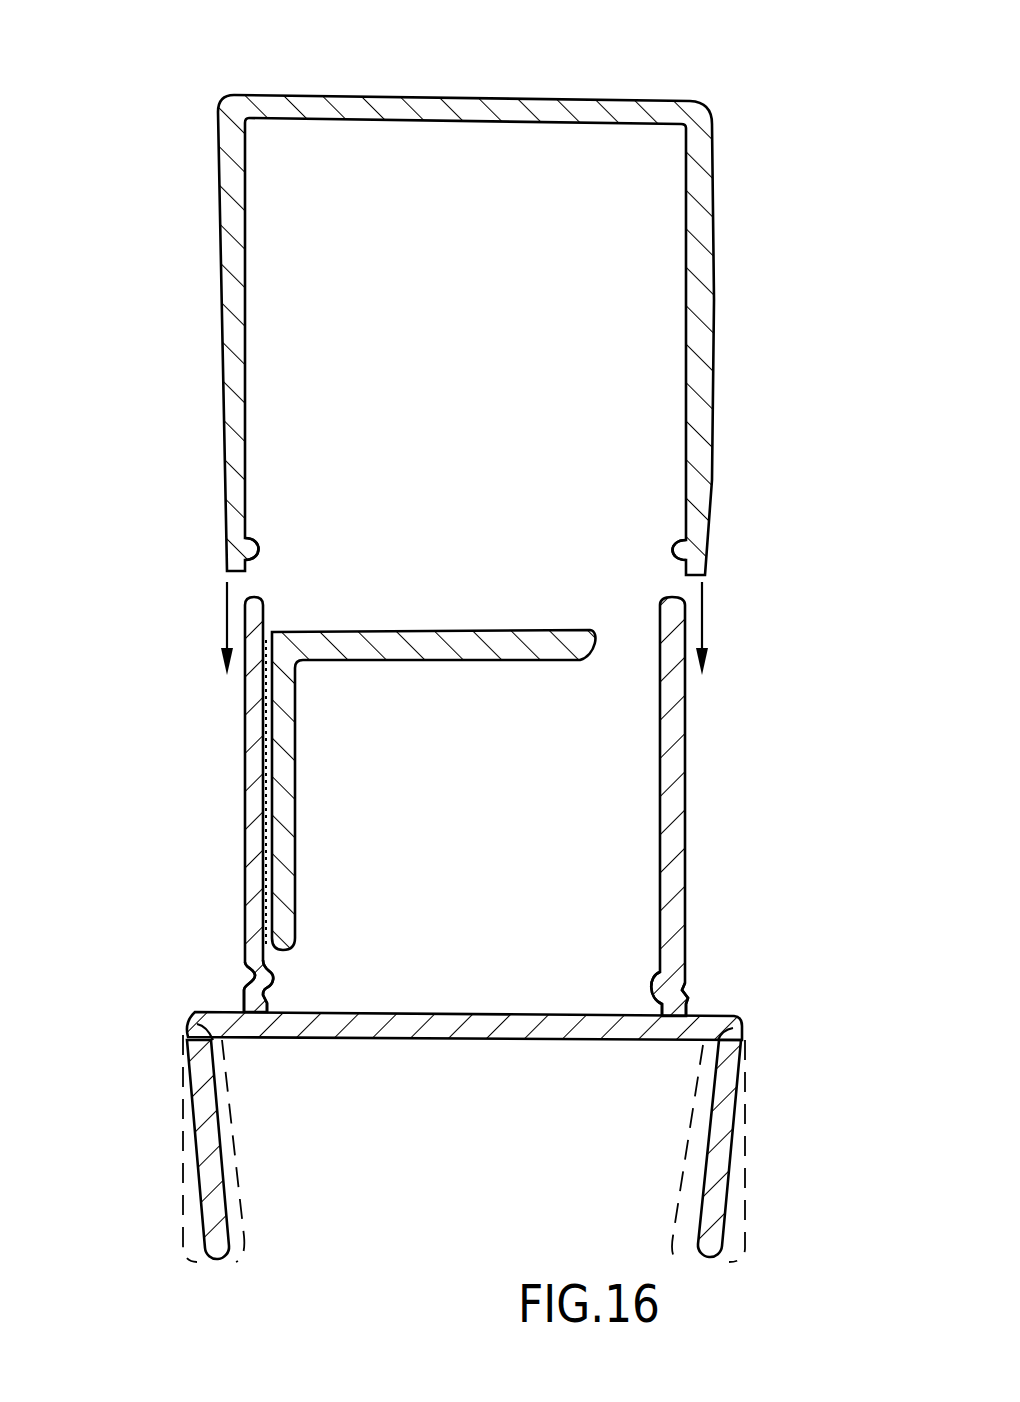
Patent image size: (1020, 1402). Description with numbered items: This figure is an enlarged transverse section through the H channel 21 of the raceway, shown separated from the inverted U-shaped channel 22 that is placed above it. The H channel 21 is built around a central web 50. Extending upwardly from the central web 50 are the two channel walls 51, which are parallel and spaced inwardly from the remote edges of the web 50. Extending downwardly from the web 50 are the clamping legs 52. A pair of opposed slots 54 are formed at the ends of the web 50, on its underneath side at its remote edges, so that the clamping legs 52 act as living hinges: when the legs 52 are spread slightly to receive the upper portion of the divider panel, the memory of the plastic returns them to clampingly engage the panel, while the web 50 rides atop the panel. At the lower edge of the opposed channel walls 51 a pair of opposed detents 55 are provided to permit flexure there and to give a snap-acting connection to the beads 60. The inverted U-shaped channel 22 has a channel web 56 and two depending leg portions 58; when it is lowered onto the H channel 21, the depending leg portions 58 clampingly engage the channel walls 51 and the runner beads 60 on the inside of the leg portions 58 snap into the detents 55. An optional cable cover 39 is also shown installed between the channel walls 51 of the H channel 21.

The H channel 21 is at (460, 895).
The inverted U-shaped channel 22 is at (478, 290).
The cable cover 39 is at (387, 632).
The central web 50 is at (445, 1012).
The channel walls 51 is at (686, 715).
The clamping legs 52 is at (193, 1178).
The slots 54 is at (212, 1042).
The detents 55 is at (247, 983).
The channel web 56 is at (507, 95).
The depending leg portions 58 is at (218, 367).
The beads 60 is at (260, 544).